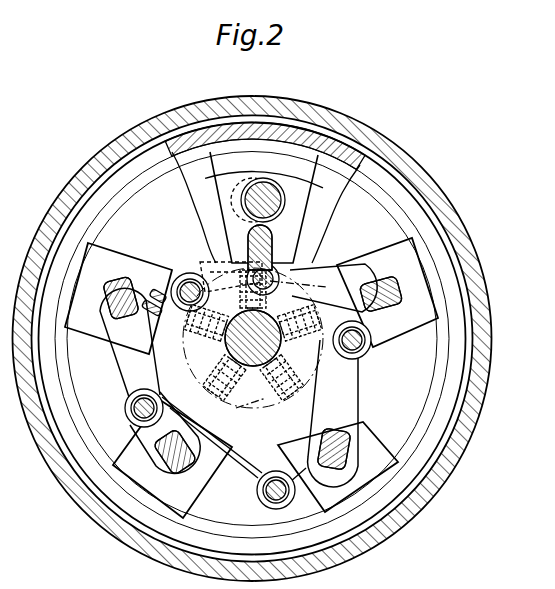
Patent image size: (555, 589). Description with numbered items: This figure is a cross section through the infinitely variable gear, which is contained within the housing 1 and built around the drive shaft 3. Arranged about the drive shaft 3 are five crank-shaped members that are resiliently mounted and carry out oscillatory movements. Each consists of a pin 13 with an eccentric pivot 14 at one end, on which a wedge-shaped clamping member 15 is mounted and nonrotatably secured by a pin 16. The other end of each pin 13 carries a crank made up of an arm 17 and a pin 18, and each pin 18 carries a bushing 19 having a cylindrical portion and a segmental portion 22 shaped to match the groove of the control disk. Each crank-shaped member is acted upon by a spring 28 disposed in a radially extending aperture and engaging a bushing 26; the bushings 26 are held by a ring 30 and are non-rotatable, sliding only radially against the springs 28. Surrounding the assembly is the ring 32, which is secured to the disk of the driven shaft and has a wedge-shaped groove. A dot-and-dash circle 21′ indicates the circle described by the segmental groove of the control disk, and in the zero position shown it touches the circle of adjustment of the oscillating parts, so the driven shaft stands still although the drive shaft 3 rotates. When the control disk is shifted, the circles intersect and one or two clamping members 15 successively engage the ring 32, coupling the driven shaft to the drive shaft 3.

The housing 1 is at (384, 532).
The drive shaft 3 is at (277, 346).
The pin 13 is at (245, 198).
The eccentric pivot 14 is at (286, 199).
The clamping member 15 is at (318, 172).
The pin 16 is at (273, 252).
The arm 17 is at (322, 272).
The pin 18 is at (185, 277).
The bushing 19 is at (152, 396).
The circle 21′ is at (311, 287).
The segmental portion 22 is at (216, 264).
The bushing 26 is at (110, 256).
The spring 28 is at (224, 342).
The ring 30 is at (380, 190).
The ring 32 is at (362, 160).